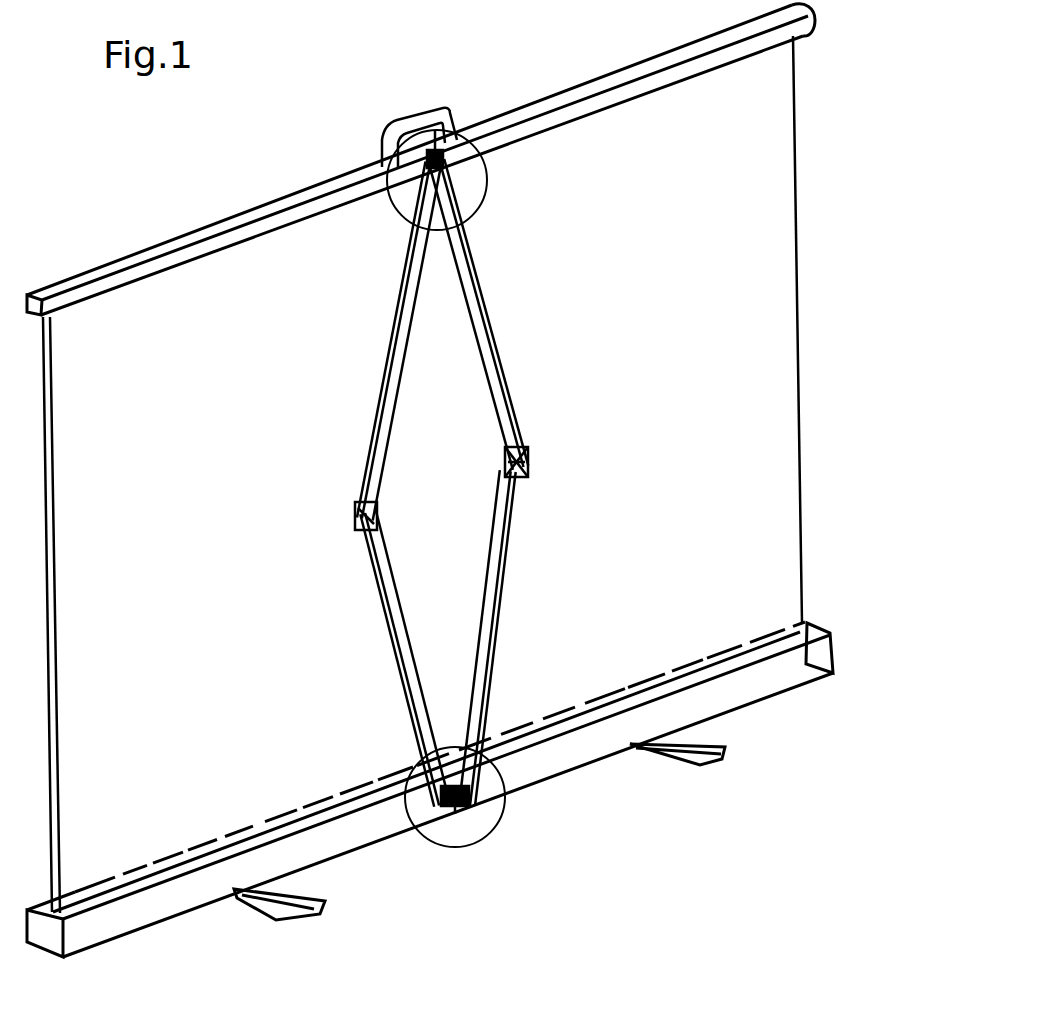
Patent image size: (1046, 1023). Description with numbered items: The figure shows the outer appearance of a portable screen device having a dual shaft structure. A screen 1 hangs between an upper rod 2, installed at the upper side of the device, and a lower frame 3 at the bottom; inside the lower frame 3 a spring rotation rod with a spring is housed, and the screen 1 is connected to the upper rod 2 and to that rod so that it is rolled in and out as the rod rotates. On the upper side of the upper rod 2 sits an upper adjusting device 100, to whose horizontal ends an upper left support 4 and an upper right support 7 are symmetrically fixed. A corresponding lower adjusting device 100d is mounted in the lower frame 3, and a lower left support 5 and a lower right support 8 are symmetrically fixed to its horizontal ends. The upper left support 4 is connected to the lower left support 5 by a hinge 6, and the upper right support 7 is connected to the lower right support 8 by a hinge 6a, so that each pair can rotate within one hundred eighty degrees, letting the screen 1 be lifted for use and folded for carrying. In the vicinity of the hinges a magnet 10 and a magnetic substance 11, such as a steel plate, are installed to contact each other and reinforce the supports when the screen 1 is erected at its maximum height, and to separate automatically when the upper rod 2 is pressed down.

The screen 1 is at (444, 474).
The upper rod 2 is at (421, 159).
The lower frame 3 is at (430, 803).
The upper left support 4 is at (399, 341).
The lower left support 5 is at (397, 658).
The hinge 6 is at (344, 552).
The hinge 6a is at (551, 451).
The upper right support 7 is at (488, 314).
The lower right support 8 is at (500, 638).
The magnet 10 is at (400, 505).
The magnetic substance 11 is at (491, 501).
The upper adjusting device 100 is at (480, 169).
The lower hinge assembly 100d is at (496, 800).